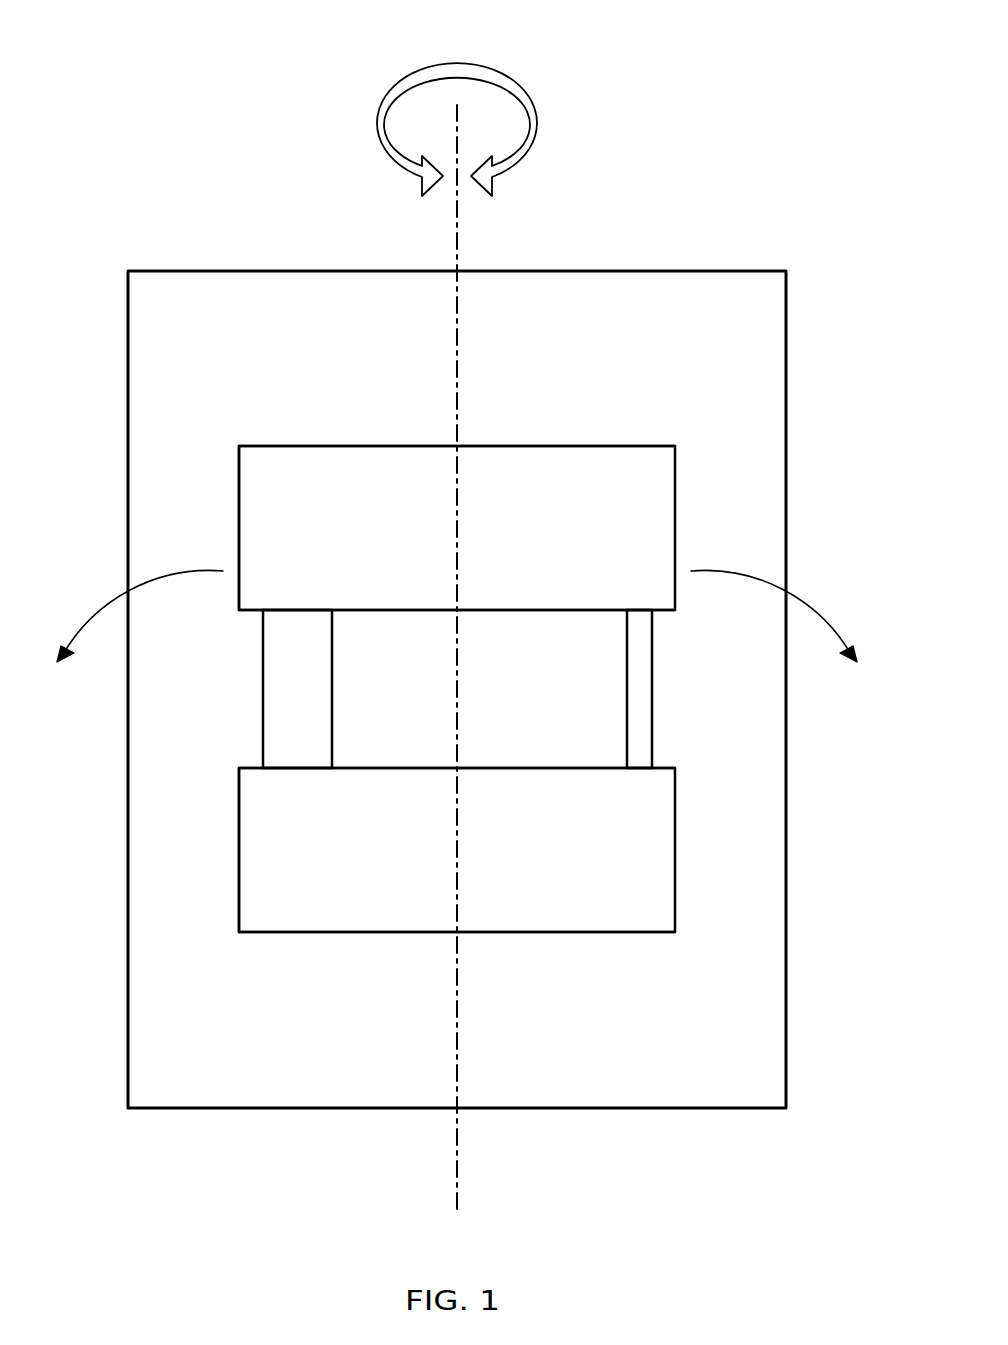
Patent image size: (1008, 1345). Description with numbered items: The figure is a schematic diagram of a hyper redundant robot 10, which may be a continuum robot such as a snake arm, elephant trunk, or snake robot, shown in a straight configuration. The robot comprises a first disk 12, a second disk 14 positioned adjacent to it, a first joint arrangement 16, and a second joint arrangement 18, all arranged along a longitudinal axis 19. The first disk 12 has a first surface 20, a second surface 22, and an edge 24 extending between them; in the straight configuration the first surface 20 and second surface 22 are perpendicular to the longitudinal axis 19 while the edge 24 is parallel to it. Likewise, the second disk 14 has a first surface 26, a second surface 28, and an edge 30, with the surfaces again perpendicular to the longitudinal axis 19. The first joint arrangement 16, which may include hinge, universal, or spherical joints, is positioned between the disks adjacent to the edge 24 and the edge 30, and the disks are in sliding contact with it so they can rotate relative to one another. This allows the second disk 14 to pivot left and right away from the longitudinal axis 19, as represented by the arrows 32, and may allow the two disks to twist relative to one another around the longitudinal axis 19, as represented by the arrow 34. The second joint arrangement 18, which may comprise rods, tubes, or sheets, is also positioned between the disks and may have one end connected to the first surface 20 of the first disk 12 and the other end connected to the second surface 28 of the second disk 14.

The hyper redundant robot 10 is at (727, 146).
The first disk 12 is at (650, 850).
The second disk 14 is at (668, 522).
The first joint arrangement 16 is at (277, 682).
The second joint arrangement 18 is at (637, 688).
The longitudinal axis 19 is at (457, 1178).
The first surface 20 is at (495, 768).
The second surface 22 is at (535, 933).
The edge 24 is at (237, 838).
The first surface 26 is at (568, 446).
The second surface 28 is at (541, 611).
The edge 30 is at (238, 505).
The arrows 32 is at (96, 610).
The arrow 34 is at (470, 63).